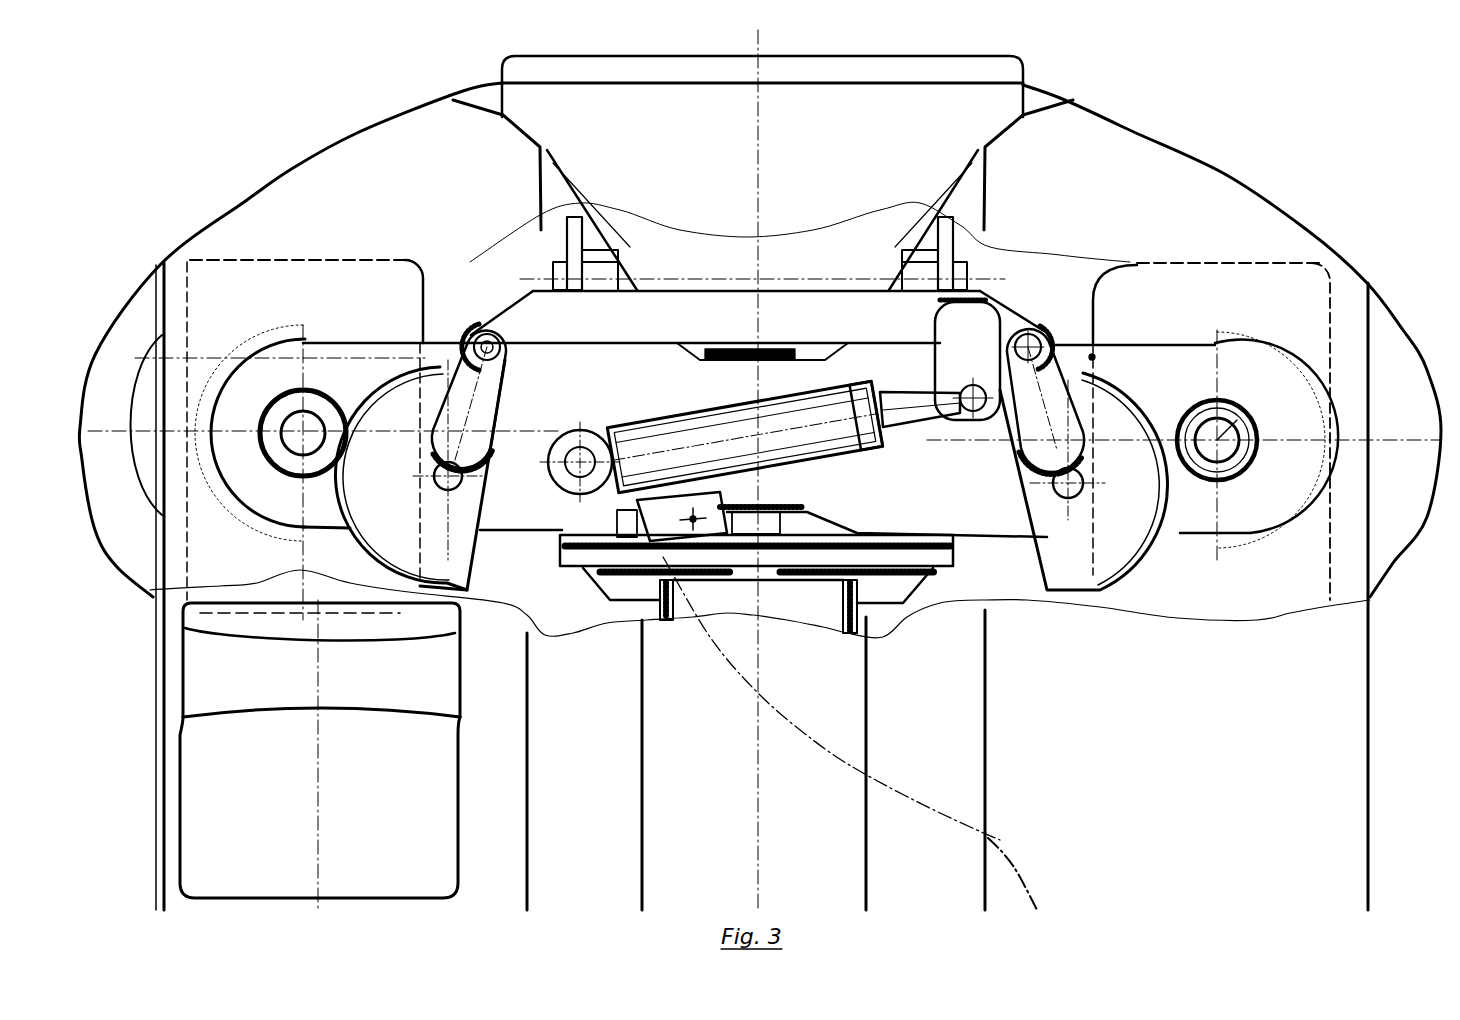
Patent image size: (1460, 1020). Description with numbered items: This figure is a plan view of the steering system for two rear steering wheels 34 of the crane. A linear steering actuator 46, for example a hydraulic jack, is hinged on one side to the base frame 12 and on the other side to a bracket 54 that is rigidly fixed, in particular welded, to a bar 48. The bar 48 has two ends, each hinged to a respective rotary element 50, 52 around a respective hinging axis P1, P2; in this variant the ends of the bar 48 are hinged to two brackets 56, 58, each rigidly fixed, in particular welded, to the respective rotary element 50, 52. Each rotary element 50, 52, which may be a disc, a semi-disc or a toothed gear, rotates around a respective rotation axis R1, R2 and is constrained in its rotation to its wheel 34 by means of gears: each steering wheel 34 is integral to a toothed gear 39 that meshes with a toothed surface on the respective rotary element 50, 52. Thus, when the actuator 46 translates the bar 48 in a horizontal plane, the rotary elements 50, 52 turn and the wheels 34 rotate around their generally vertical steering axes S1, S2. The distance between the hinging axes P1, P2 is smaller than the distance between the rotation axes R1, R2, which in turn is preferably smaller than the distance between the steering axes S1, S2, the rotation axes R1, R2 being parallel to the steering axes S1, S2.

The base frame 12 is at (593, 835).
The steering wheel 34 is at (347, 303).
The toothed gear 39 is at (290, 452).
The linear steering actuator 46 is at (833, 427).
The bar 48 is at (800, 330).
The rotary element 50 is at (401, 512).
The rotary element 52 is at (1143, 519).
The bracket 54 is at (985, 351).
The bracket 56 is at (508, 417).
The bracket 58 is at (1153, 403).
The hinging axis P1 is at (480, 330).
The hinging axis P2 is at (1040, 335).
The rotation axis R1 is at (462, 485).
The rotation axis R2 is at (1053, 483).
The steering axis S1 is at (300, 430).
The steering axis S2 is at (1265, 517).